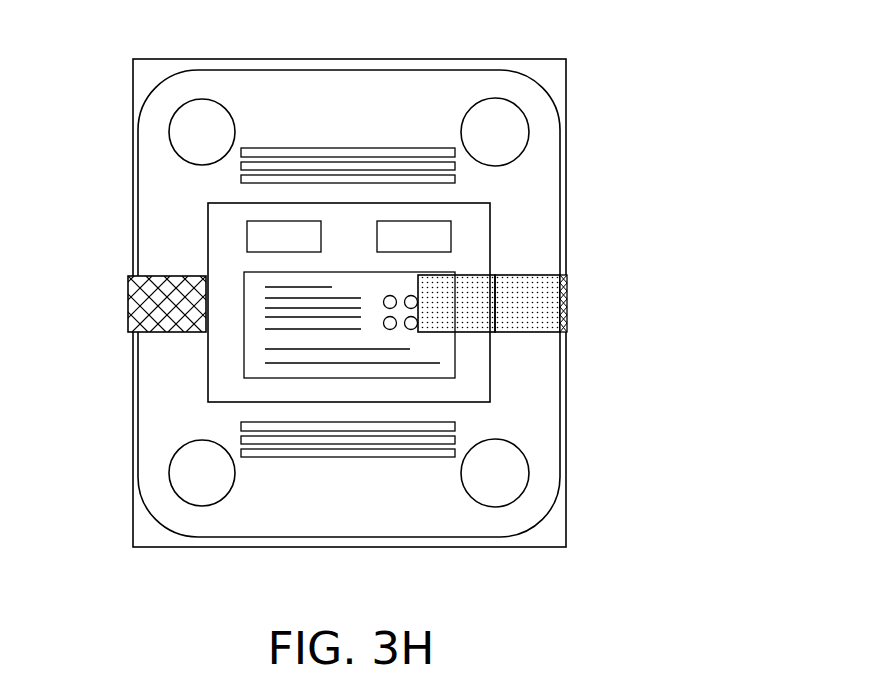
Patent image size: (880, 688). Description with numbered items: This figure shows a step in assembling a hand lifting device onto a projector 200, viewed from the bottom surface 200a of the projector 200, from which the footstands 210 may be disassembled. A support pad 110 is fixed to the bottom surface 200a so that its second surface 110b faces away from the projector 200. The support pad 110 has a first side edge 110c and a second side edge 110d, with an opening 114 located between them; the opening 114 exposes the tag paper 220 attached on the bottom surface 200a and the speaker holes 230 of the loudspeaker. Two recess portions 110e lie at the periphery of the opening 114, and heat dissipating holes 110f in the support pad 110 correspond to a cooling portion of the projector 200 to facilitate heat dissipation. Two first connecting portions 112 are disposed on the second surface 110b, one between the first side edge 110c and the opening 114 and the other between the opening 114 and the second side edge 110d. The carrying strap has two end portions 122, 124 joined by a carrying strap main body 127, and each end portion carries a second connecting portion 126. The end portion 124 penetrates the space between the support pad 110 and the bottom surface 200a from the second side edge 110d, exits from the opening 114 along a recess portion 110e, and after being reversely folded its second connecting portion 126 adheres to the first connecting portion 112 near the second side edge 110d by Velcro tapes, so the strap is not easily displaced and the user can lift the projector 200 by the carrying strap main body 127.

The projector 200 is at (141, 523).
The bottom surface 200a is at (552, 75).
The support pad 110 is at (153, 165).
The second surface 110b is at (432, 107).
The first side edge 110c is at (136, 389).
The second side edge 110d is at (561, 403).
The recess portions 110e is at (207, 305).
The heat dissipating holes 110f is at (285, 147).
The footstands 210 is at (195, 125).
The opening 114 is at (338, 201).
The speaker holes 230 is at (258, 236).
The tag paper 220 is at (352, 372).
The end portion 122 is at (175, 295).
The end portion 124 is at (548, 257).
The second connecting portion 126 is at (467, 282).
The first connecting portion 112 is at (525, 292).
The carrying strap main body 127 is at (568, 300).